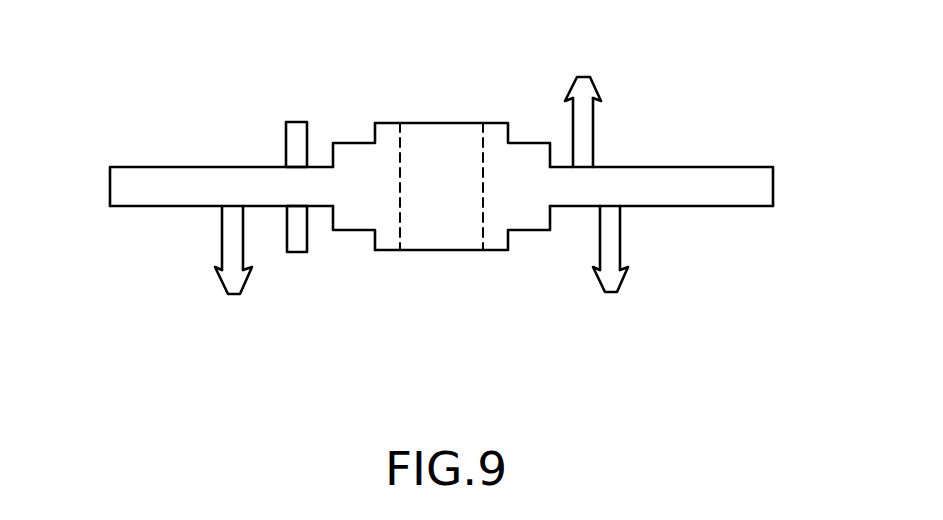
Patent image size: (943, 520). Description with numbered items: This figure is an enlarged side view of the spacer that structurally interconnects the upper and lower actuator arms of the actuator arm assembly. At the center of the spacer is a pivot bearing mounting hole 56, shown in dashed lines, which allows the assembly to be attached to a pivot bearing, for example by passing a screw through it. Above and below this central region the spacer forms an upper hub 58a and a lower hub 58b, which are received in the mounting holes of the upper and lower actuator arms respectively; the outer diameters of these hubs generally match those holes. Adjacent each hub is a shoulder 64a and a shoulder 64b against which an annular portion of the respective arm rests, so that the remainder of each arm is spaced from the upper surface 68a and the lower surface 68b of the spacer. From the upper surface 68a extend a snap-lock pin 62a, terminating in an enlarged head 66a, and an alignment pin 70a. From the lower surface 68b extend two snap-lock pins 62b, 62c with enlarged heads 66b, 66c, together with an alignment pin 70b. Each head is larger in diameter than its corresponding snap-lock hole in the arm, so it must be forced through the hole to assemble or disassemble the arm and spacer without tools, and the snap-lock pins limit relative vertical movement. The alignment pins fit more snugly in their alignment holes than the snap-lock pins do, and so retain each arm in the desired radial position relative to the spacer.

The pivot bearing mounting hole 56 is at (400, 160).
The upper hub 58a is at (510, 128).
The lower hub 58b is at (513, 252).
The snap-lock pin 62a is at (596, 125).
The snap-lock pin 62b is at (220, 240).
The snap-lock pin 62c is at (620, 228).
The shoulder 64a is at (349, 143).
The shoulder 64b is at (335, 228).
The head 66a is at (598, 88).
The head 66b is at (218, 287).
The head 66c is at (627, 280).
The upper surface 68a is at (137, 167).
The lower surface 68b is at (135, 207).
The alignment pin 70a is at (286, 146).
The alignment pin 70b is at (310, 235).